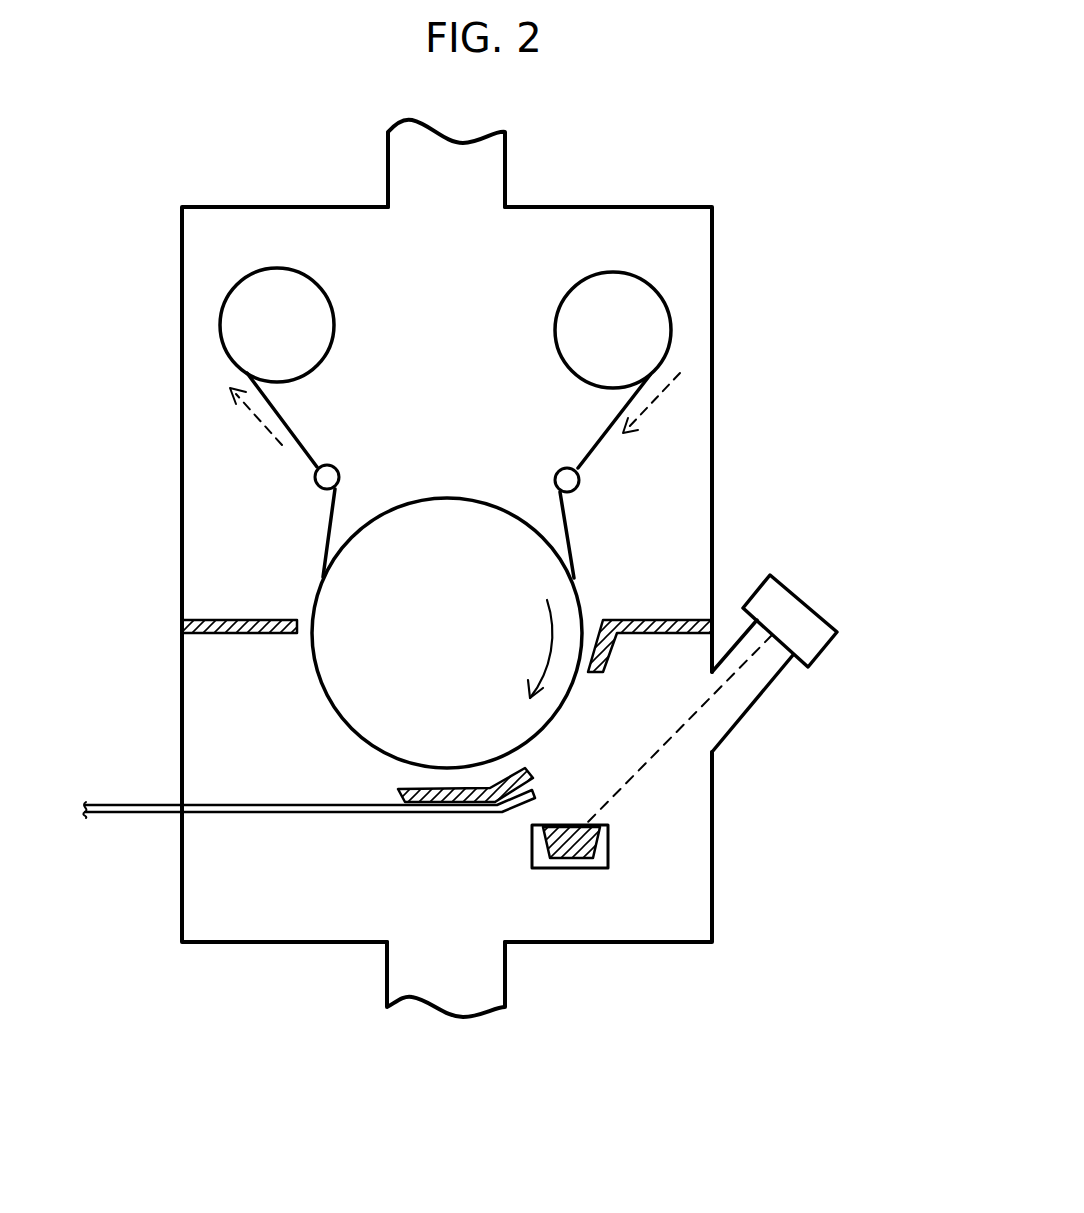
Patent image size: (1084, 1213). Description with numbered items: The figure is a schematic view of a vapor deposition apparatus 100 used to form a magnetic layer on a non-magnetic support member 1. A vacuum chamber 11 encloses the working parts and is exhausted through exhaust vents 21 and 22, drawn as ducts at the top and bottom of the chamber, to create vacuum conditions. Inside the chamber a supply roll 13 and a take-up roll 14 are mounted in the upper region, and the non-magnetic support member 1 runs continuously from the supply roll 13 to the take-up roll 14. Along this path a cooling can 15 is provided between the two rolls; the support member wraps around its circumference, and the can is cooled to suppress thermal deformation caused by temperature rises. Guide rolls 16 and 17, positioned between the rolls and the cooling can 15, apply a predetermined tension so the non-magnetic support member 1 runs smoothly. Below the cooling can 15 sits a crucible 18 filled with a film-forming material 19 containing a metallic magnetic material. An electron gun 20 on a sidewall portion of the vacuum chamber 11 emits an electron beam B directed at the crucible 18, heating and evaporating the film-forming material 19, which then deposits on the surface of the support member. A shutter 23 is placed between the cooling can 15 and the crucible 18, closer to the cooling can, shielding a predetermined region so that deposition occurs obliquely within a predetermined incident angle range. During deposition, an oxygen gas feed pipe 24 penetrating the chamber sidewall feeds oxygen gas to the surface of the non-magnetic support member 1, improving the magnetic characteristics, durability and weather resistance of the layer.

The non-magnetic support member 1 is at (597, 440).
The vacuum chamber 11 is at (673, 255).
The supply roll 13 is at (652, 345).
The take-up roll 14 is at (243, 343).
The cooling can 15 is at (332, 672).
The guide roll 16 is at (577, 487).
The guide roll 17 is at (318, 470).
The crucible 18 is at (604, 838).
The film-forming material 19 is at (580, 858).
The electron gun 20 is at (795, 625).
The exhaust vent 21 is at (482, 180).
The exhaust vent 22 is at (487, 978).
The shutter 23 is at (600, 655).
The oxygen gas feed pipe 24 is at (250, 815).
The electron beam B is at (680, 735).
The vapor deposition apparatus 100 is at (745, 1098).